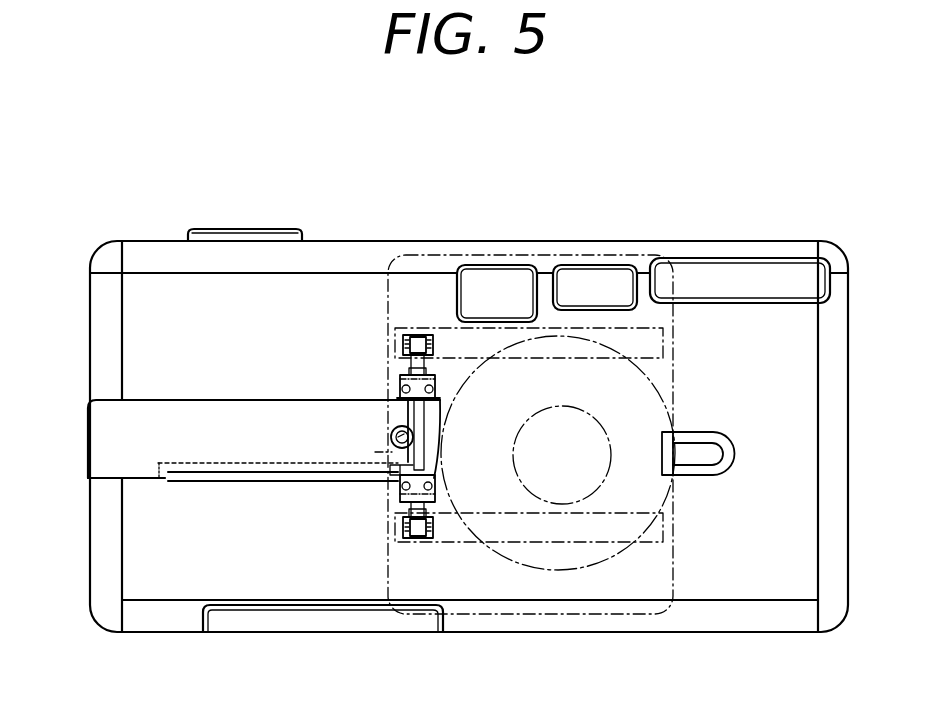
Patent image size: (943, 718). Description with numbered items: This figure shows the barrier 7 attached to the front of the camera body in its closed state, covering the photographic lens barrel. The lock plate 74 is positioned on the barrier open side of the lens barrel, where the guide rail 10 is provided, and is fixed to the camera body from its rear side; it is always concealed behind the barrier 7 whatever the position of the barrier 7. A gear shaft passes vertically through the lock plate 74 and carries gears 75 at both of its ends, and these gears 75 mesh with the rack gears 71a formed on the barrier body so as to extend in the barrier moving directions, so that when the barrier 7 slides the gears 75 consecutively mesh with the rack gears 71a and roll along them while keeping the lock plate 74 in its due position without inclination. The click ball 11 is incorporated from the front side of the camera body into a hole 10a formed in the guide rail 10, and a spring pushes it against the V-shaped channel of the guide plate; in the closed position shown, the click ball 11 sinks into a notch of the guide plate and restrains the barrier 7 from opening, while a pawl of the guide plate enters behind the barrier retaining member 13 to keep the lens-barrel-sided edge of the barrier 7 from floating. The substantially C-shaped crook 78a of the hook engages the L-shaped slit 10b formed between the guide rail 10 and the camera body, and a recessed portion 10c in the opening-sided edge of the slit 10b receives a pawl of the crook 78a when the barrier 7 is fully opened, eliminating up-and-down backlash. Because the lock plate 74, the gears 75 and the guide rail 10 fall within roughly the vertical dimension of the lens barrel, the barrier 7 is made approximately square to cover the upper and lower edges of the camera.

The guide rail 10 is at (100, 455).
The hole 10a is at (380, 400).
The L-shaped slit 10b is at (197, 482).
The recessed portion 10c is at (160, 478).
The click ball 11 is at (392, 432).
The barrier 7 is at (545, 255).
The rack gear 71a is at (613, 338).
The lock plate 74 is at (400, 500).
The gears 75 is at (433, 335).
The crook 78a is at (398, 480).
The barrier retaining member 13 is at (695, 477).